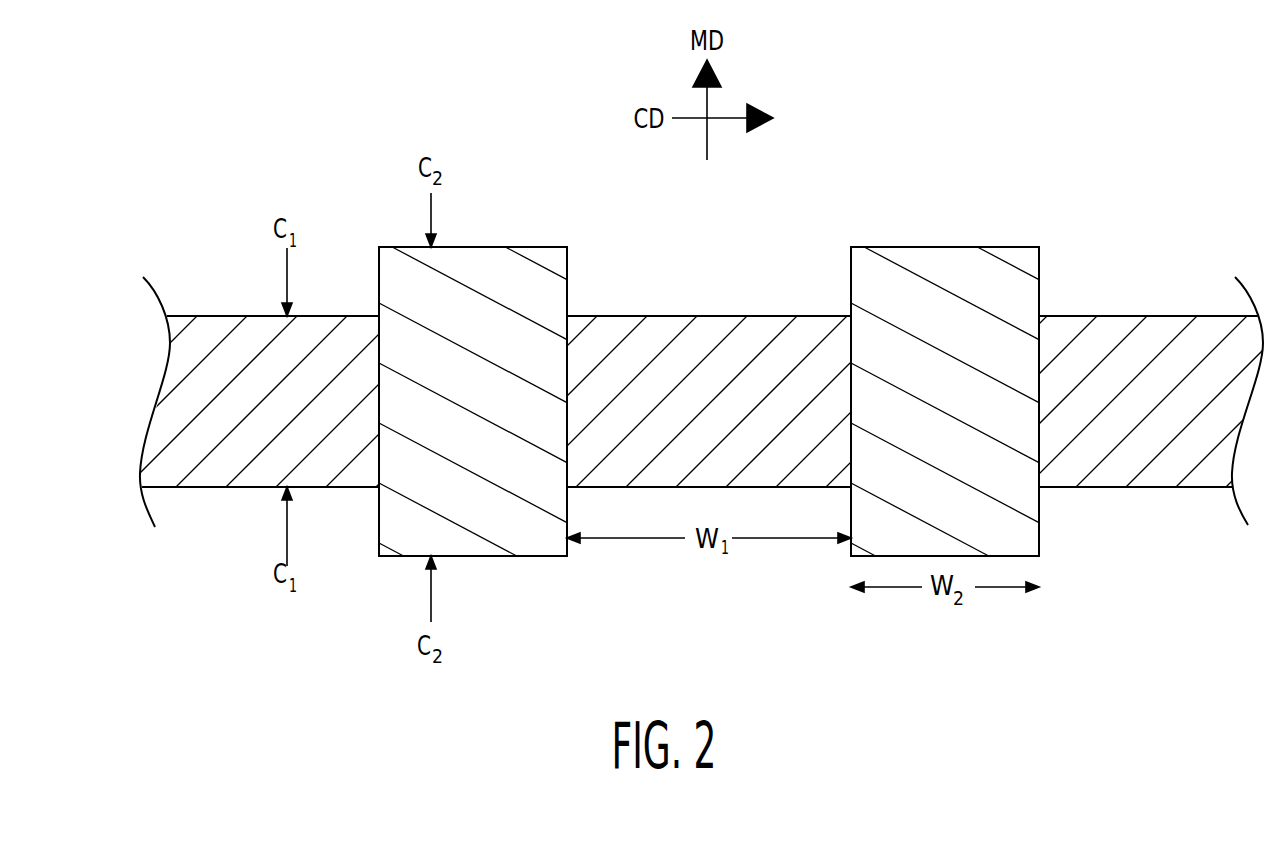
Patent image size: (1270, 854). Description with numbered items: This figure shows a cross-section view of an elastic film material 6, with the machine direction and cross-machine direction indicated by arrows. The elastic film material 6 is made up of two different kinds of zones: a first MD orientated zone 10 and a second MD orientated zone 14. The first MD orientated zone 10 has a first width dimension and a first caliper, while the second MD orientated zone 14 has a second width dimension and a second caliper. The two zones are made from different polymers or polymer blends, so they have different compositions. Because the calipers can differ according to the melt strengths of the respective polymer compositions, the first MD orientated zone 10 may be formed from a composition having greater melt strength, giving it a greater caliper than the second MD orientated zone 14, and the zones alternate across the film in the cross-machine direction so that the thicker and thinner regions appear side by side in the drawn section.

The elastic film material 6 is at (953, 191).
The first MD orientated zone 10 is at (216, 327).
The second MD orientated zone 14 is at (455, 252).